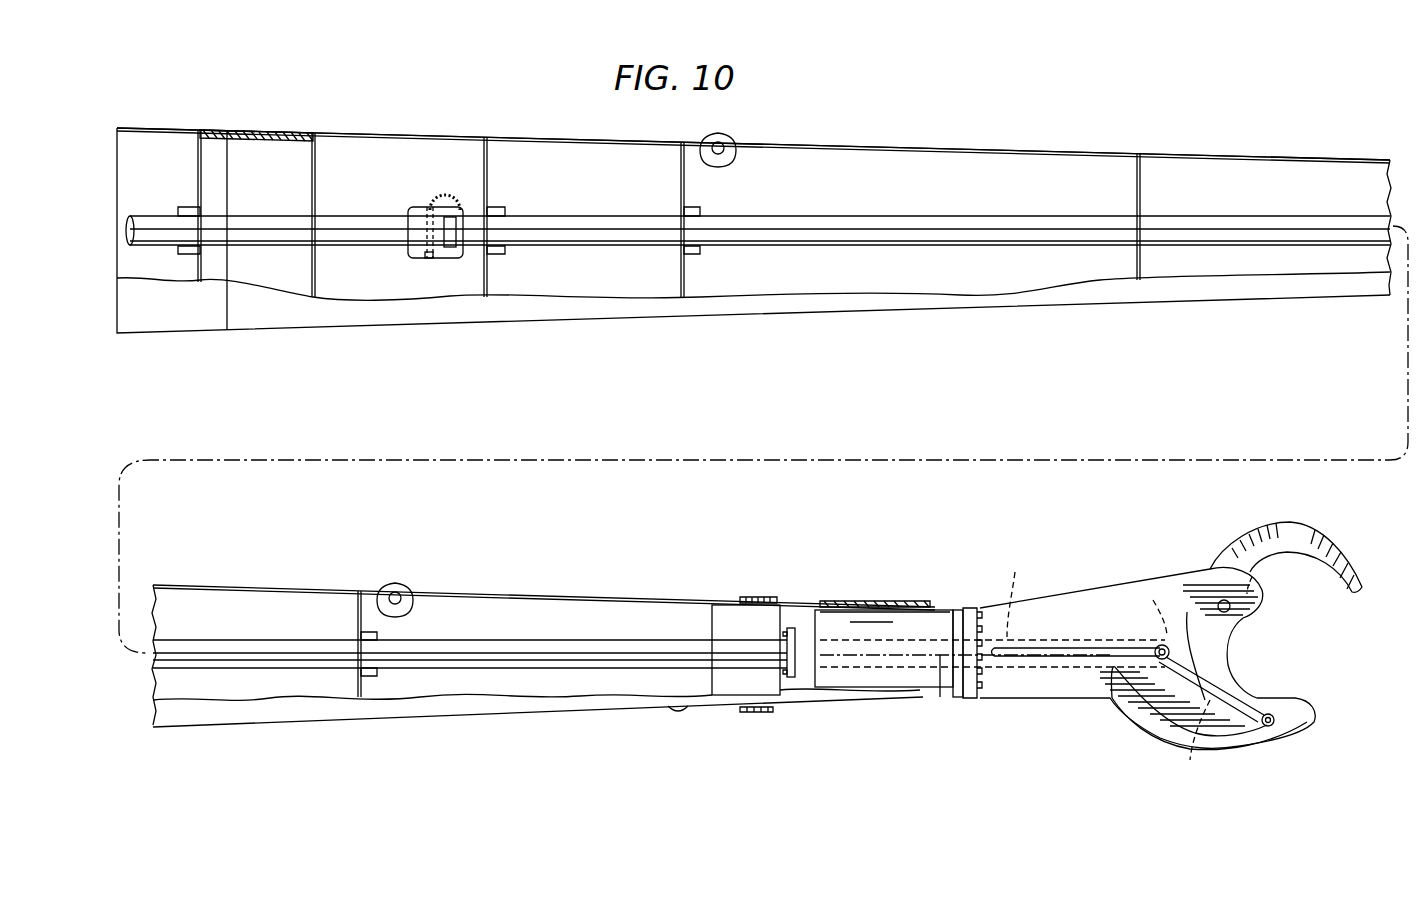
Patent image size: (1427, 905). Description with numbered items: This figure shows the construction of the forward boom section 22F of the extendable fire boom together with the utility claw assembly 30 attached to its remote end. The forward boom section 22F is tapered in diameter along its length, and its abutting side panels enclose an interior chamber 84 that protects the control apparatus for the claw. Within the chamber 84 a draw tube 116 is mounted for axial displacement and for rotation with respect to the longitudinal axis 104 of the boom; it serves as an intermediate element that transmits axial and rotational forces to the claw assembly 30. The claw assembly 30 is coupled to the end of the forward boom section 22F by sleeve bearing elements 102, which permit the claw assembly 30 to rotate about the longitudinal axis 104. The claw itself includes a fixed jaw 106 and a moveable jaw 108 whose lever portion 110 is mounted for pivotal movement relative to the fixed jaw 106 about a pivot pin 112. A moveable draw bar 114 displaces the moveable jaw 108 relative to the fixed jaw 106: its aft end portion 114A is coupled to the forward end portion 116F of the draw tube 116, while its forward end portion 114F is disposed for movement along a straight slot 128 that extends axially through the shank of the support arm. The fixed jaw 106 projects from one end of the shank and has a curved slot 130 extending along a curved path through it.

The forward boom section 22F is at (890, 150).
The interior chamber 84 is at (1035, 162).
The draw tube 116 is at (1277, 245).
The forward end portion 116F is at (785, 633).
The sleeve bearing elements 102 is at (838, 609).
The longitudinal axis 104 is at (938, 697).
The aft end portion 114A is at (843, 667).
The utility claw assembly 30 is at (1167, 558).
The moveable jaw 108 is at (1350, 563).
The pivot pin 112 is at (1230, 611).
The straight slot 128 is at (1045, 653).
The lever portion 110 is at (1211, 724).
The fixed jaw 106 is at (1303, 718).
The curved slot 130 is at (1153, 710).
The draw bar 114 is at (1003, 564).
The forward end portion 114F is at (1140, 600).